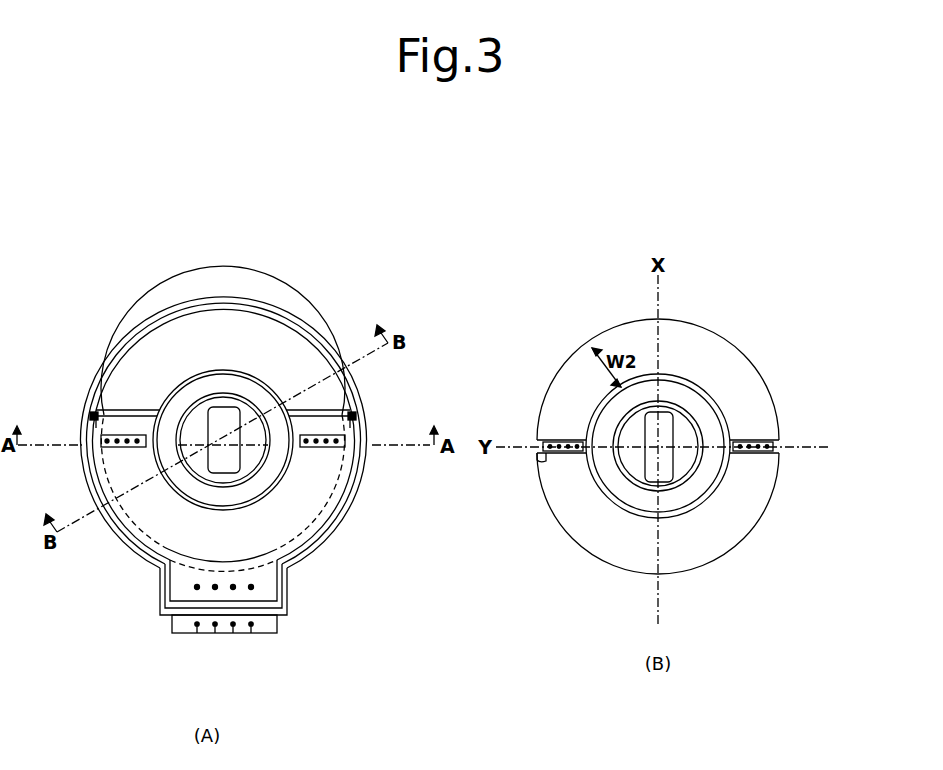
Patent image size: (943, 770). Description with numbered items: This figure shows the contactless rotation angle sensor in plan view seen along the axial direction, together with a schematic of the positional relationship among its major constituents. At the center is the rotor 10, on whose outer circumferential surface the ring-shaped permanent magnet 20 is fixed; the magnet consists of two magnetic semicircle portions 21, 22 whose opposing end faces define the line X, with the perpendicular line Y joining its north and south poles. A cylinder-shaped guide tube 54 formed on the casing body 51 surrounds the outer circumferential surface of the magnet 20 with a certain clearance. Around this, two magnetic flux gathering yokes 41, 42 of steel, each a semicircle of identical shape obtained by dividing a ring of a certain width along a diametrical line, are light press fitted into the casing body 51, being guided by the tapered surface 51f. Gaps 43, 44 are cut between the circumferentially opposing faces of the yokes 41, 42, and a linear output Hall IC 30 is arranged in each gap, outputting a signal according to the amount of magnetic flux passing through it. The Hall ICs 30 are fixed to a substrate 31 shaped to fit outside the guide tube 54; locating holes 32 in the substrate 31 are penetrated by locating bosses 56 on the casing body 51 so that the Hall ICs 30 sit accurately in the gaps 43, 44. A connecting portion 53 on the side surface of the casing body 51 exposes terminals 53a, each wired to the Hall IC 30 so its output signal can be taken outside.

The rotor 10 is at (200, 470).
The ring-shaped permanent magnet 20 is at (411, 430).
The magnetic semicircle portion 21 is at (670, 392).
The magnetic semicircle portion 22 is at (650, 372).
The Hall IC 30 is at (347, 443).
The substrate 31 is at (330, 410).
The locating holes 32 is at (356, 416).
The magnetic flux gathering yoke 41 is at (270, 338).
The magnetic flux gathering yoke 42 is at (334, 528).
The gap 43 is at (540, 449).
The gap 44 is at (782, 446).
The casing body 51 is at (290, 588).
The tapered surface 51f is at (343, 508).
The connecting portion 53 is at (178, 630).
The terminals 53a is at (251, 628).
The guide tube 54 is at (183, 503).
The locating bosses 56 is at (356, 420).